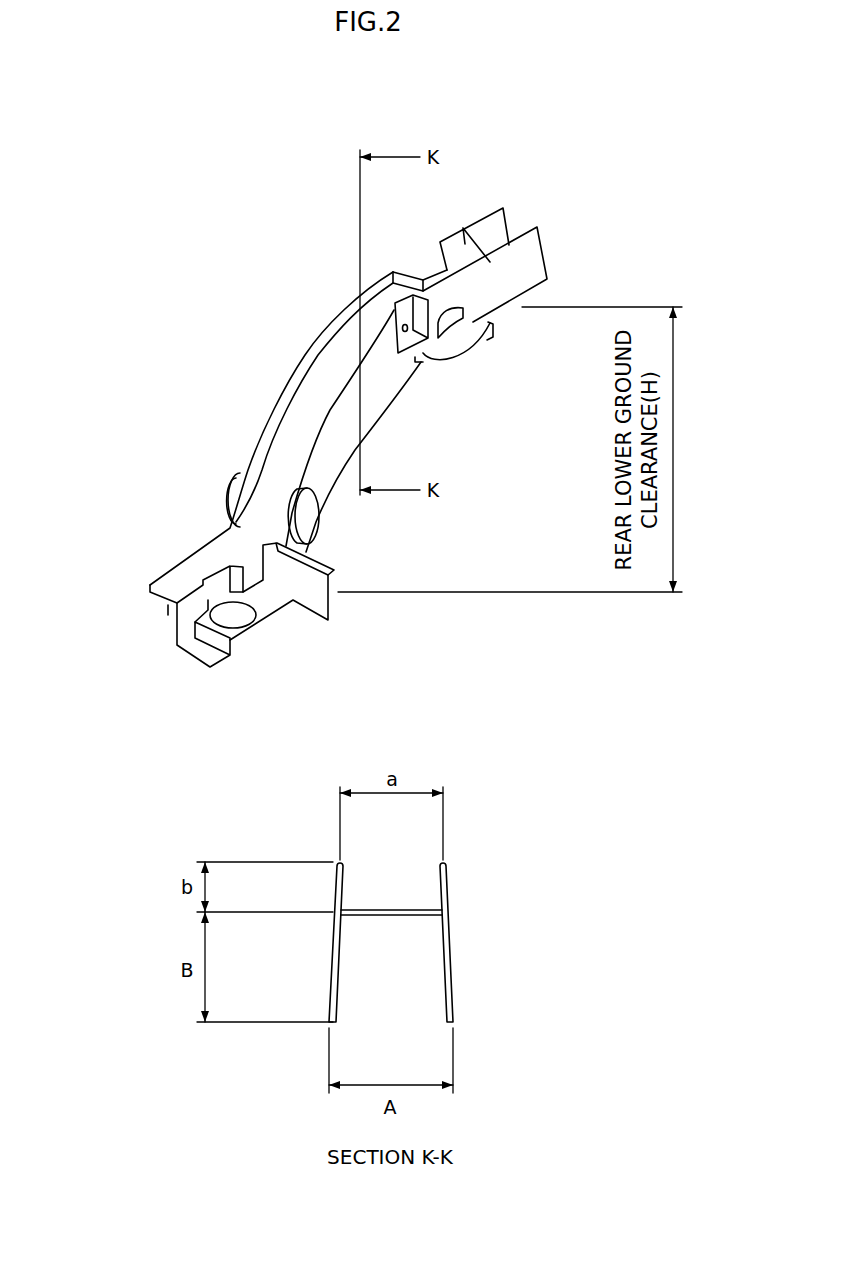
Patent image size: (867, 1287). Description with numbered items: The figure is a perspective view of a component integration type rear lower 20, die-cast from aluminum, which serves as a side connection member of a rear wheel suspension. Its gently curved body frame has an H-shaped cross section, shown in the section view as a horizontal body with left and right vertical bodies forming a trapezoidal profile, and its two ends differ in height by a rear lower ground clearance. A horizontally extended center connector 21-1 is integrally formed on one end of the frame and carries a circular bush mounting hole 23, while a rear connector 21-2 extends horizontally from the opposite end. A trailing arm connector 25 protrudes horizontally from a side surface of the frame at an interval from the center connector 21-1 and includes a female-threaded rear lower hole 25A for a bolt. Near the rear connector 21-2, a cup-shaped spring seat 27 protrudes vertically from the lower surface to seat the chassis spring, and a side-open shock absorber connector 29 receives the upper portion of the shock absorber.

The rear lower 20 is at (262, 213).
The center connector 21-1 is at (183, 630).
The rear connector 21-2 is at (505, 214).
The bush mounting hole 23 is at (245, 617).
The trailing arm connector 25 is at (237, 500).
The rear lower hole 25A is at (310, 527).
The spring seat 27 is at (465, 343).
The shock absorber connector 29 is at (423, 272).